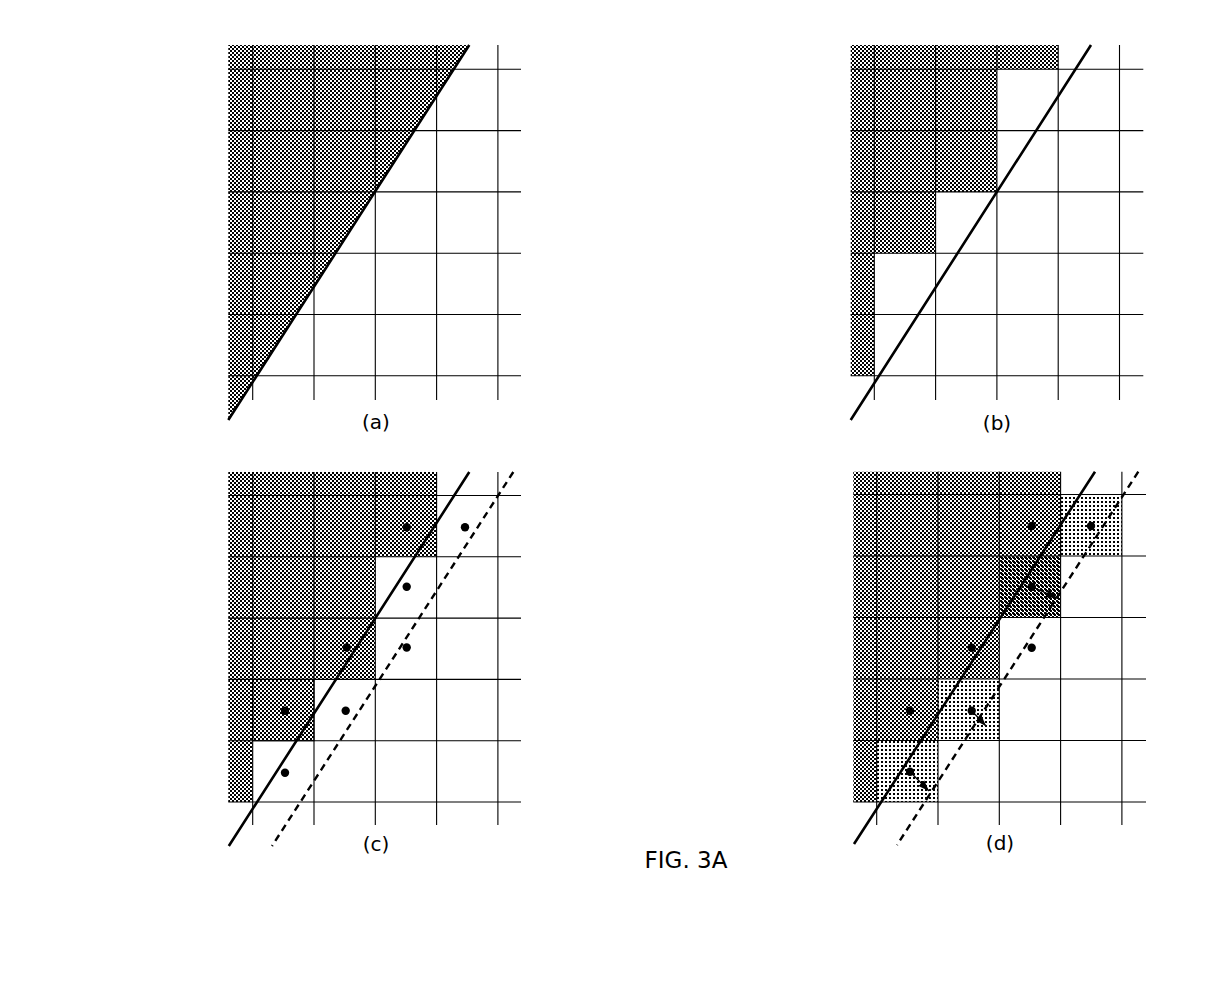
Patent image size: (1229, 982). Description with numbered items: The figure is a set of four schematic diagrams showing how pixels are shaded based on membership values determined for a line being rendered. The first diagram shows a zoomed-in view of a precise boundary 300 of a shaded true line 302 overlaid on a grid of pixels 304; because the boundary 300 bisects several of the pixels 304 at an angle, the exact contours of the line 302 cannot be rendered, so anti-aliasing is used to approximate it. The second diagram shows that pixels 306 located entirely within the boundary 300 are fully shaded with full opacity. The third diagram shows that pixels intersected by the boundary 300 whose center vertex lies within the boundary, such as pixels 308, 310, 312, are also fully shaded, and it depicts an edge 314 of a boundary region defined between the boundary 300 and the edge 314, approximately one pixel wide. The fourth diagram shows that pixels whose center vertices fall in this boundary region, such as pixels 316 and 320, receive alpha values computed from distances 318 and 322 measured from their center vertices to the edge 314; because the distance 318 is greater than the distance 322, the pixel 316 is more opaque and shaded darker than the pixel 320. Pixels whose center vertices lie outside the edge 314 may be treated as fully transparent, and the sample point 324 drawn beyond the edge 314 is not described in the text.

The precise boundary 300 is at (446, 86).
The true line 302 is at (226, 163).
The grid of pixels 304 is at (499, 354).
The pixels located entirely within the boundary 306 is at (844, 100).
The pixel with center vertex within the boundary 308 is at (408, 506).
The pixel with center vertex within the boundary 310 is at (976, 356).
The pixel with center vertex within the boundary 312 is at (266, 690).
The edge of boundary region 314 is at (457, 570).
The pixel 316 is at (900, 792).
The distance 318 is at (922, 788).
The pixel 320 is at (991, 733).
The distance 322 is at (980, 708).
The sample point outside offset edge 324 is at (1044, 663).